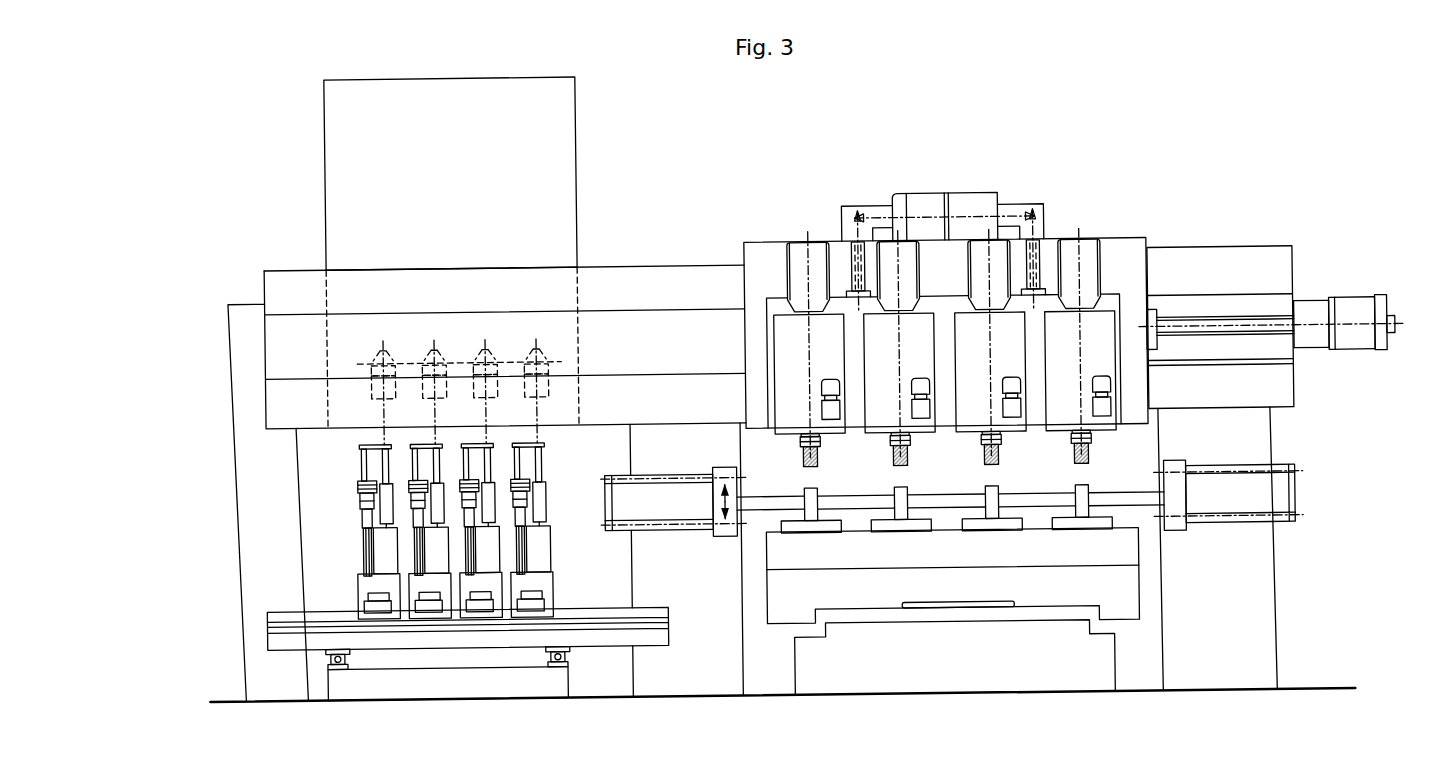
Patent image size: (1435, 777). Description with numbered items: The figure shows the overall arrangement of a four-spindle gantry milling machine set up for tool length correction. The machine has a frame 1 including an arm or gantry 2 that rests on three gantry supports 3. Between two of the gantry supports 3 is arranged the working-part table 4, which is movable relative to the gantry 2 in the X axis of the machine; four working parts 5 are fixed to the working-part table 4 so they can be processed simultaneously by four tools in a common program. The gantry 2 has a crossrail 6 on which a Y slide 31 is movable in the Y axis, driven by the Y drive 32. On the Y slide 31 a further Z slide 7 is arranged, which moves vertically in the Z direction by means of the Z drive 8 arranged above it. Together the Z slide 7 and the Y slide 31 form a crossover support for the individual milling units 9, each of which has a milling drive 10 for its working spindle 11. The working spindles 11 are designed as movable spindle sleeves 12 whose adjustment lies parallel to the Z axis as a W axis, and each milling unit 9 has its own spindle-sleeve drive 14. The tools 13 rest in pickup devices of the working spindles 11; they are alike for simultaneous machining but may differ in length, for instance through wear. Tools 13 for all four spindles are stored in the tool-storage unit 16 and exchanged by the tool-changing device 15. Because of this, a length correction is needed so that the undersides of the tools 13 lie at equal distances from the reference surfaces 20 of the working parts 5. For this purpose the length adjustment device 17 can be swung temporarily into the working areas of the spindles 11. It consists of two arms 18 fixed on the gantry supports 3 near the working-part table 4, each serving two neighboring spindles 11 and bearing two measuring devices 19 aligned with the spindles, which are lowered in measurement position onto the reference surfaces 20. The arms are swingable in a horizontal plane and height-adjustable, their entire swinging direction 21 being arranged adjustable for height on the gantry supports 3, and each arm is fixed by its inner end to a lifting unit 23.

The frame 1 is at (634, 260).
The gantry 2 is at (690, 271).
The gantry supports 3 is at (1307, 429).
The working-part table 4 is at (1123, 592).
The working parts 5 is at (1100, 529).
The crossrail 6 is at (1232, 274).
The Z slide 7 is at (1116, 311).
The Z drive 8 is at (983, 207).
The milling units 9 is at (1098, 336).
The milling drive 10 is at (1085, 260).
The working spindles 11 is at (828, 446).
The spindle sleeves 12 is at (805, 435).
The tools 13 is at (806, 467).
The spindle-sleeve drive 14 is at (820, 398).
The tool-changing device 15 is at (548, 488).
The tool-storage unit 16 is at (556, 144).
The length adjustment device 17 is at (728, 456).
The arms 18 is at (767, 520).
The measuring devices 19 is at (1078, 517).
The reference surfaces 20 is at (921, 519).
The swinging direction 21 is at (1237, 538).
The lifting unit 23 is at (719, 517).
The Y slide 31 is at (1122, 257).
The Y drive 32 is at (1349, 319).